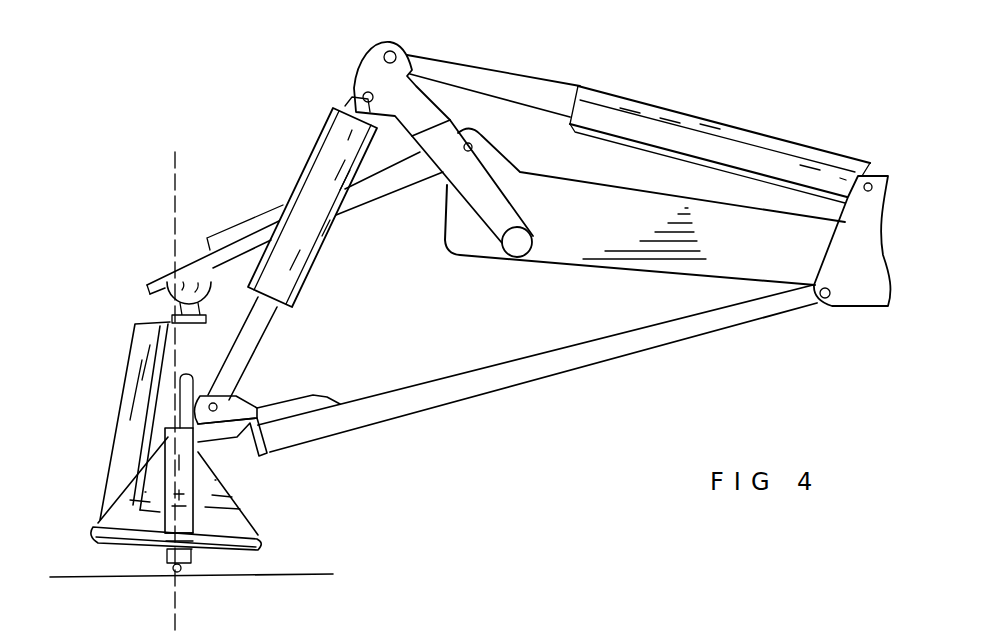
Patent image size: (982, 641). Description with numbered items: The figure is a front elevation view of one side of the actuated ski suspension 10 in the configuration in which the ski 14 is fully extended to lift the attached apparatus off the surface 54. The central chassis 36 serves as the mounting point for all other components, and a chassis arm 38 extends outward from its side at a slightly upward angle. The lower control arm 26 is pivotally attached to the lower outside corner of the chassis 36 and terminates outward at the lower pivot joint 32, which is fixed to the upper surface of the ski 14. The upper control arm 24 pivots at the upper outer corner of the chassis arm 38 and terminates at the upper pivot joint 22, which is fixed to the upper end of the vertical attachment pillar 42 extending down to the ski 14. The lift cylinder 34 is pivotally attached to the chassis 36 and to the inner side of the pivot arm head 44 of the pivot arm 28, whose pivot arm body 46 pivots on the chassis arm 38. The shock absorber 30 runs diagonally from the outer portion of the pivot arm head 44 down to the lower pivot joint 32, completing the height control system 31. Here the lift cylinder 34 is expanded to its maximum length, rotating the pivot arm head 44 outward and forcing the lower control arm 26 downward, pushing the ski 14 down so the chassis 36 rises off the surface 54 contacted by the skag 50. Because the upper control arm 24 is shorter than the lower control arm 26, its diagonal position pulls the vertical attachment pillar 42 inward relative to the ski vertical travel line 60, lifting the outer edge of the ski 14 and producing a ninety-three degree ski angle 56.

The actuated ski suspension 10 is at (566, 418).
The ski 14 is at (84, 518).
The upper pivot joint 22 is at (170, 302).
The upper control arm 24 is at (207, 248).
The lower control arm 26 is at (443, 405).
The pivot arm 28 is at (340, 62).
The shock absorber 30 is at (332, 115).
The height control system 31 is at (272, 128).
The lower pivot joint 32 is at (230, 415).
The lift cylinder 34 is at (600, 88).
The chassis 36 is at (860, 197).
The chassis arm 38 is at (715, 208).
The vertical attachment pillar 42 is at (110, 453).
The pivot arm head 44 is at (410, 88).
The pivot arm body 46 is at (452, 147).
The skag 50 is at (163, 565).
The surface 54 is at (312, 565).
The ski angle 56 is at (270, 542).
The ski vertical travel line 60 is at (165, 165).